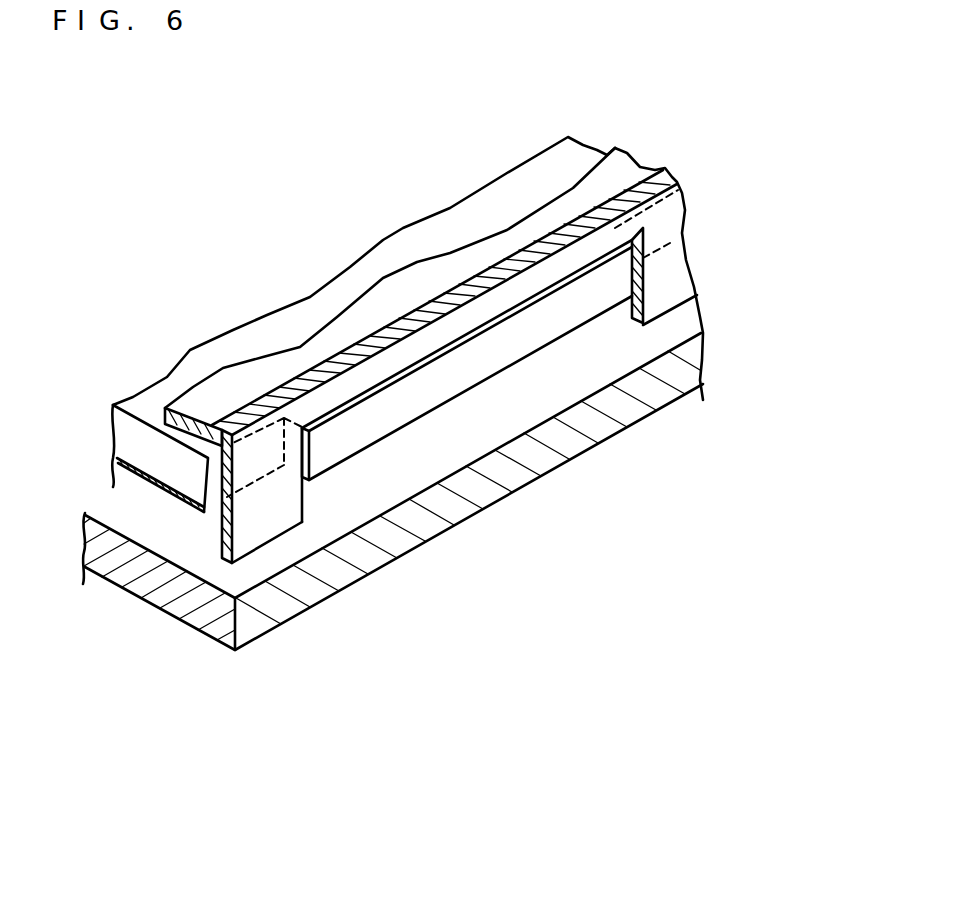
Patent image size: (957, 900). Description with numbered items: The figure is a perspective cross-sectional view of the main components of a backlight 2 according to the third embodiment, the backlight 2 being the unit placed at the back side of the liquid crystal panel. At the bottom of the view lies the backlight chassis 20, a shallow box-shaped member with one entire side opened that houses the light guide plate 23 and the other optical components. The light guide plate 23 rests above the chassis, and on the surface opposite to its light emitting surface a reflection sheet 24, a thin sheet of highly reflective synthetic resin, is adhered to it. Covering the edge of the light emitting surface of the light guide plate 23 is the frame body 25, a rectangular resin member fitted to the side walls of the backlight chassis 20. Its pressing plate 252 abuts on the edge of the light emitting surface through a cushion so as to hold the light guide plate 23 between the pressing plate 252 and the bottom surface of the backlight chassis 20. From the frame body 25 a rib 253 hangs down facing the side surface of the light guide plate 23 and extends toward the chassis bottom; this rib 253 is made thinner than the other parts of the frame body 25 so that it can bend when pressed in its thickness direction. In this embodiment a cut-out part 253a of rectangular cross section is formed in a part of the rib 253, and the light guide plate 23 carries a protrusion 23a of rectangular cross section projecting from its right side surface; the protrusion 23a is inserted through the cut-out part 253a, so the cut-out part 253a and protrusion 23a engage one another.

The backlight 2 is at (294, 163).
The backlight chassis 20 is at (205, 625).
The light guide plate 23 is at (160, 470).
The protrusion 23a is at (498, 352).
The reflection sheet 24 is at (180, 495).
The frame body 25 is at (692, 182).
The pressing plate 252 is at (250, 378).
The rib 253 is at (270, 524).
The cut-out part 253a is at (636, 306).